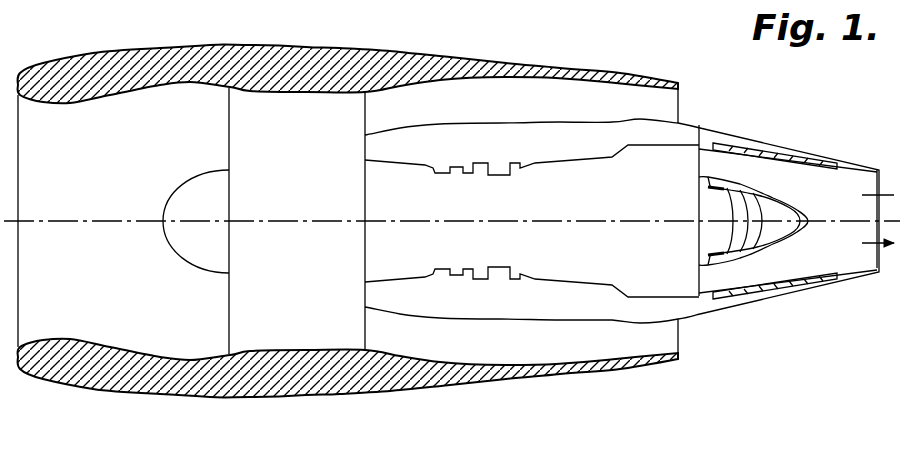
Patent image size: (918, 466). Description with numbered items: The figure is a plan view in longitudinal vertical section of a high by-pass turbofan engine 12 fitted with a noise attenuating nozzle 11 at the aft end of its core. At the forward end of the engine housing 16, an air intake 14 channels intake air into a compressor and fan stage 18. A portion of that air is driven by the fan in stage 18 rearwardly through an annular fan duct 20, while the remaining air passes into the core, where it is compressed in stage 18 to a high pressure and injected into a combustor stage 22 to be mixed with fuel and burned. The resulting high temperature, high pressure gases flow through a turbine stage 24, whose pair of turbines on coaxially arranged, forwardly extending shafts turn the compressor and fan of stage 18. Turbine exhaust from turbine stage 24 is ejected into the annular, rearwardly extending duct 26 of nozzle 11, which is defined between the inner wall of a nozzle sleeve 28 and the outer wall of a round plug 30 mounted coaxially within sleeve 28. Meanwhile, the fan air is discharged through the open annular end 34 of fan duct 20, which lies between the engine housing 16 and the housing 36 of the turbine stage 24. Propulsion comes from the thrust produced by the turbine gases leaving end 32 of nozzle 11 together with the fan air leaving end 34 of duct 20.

The noise attenuating nozzle 11 is at (771, 123).
The turbofan engine 12 is at (566, 39).
The air intake 14 is at (87, 173).
The engine housing 16 is at (262, 44).
The compressor and fan stage 18 is at (262, 333).
The annular fan duct 20 is at (596, 101).
The combustor stage 22 is at (506, 296).
The turbine stage 24 is at (655, 306).
The duct 26 is at (784, 184).
The nozzle sleeve 28 is at (796, 147).
The plug 30 is at (787, 197).
The end of nozzle 32 is at (877, 269).
The open annular end of fan duct 34 is at (681, 94).
The housing of turbine stage 36 is at (691, 124).